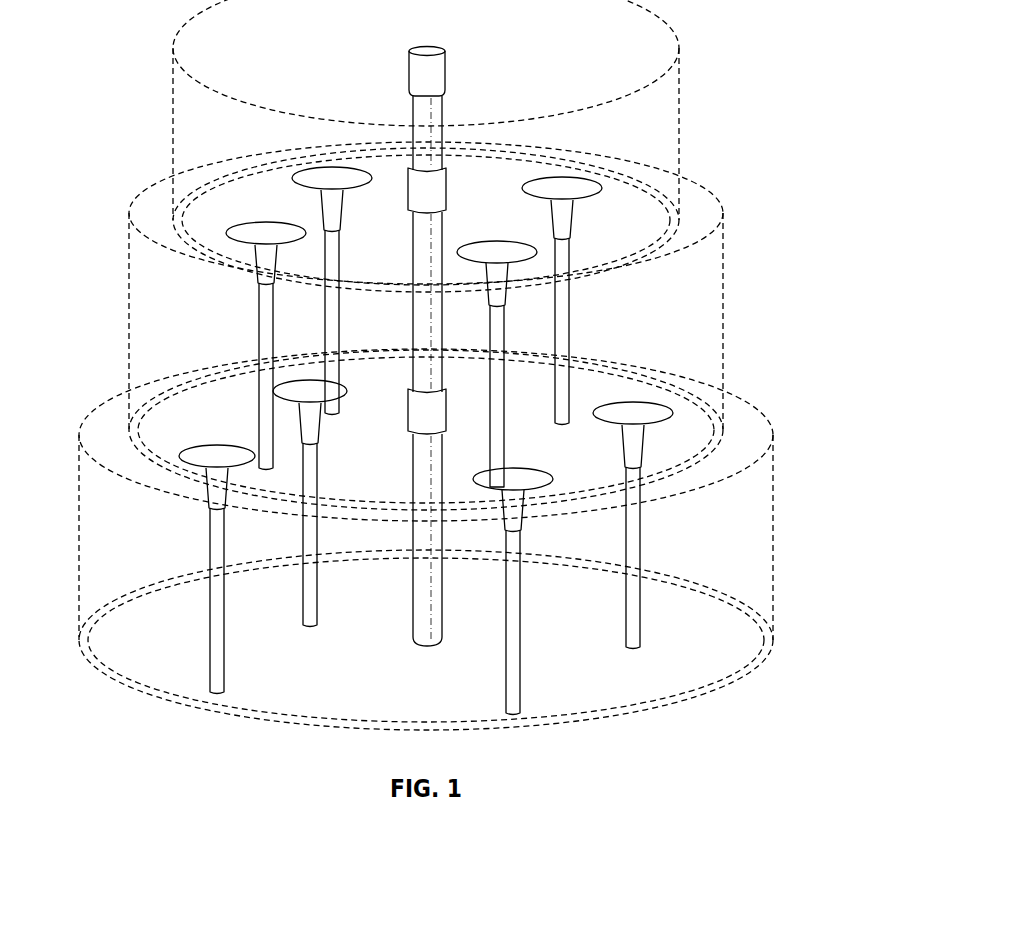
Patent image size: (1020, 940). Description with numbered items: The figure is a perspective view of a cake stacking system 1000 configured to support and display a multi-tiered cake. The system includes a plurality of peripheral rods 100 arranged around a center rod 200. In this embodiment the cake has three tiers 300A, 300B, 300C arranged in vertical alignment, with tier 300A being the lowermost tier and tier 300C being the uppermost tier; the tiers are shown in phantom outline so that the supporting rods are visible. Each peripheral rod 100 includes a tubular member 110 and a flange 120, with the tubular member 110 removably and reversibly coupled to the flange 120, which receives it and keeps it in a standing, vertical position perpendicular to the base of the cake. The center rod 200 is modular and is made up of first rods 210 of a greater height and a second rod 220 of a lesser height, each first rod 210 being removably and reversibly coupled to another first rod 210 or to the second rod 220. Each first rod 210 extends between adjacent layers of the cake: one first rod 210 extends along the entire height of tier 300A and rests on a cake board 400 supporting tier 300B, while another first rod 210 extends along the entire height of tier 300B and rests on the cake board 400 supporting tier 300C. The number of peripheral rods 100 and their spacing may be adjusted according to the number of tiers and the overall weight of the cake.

The cake stacking system 1000 is at (128, 145).
The peripheral rod 100 is at (210, 690).
The tubular member 110 is at (632, 585).
The flange 120 is at (620, 439).
The center rod 200 is at (433, 347).
The first rod 210 is at (418, 302).
The second rod 220 is at (427, 128).
The tier 300A is at (740, 553).
The tier 300B is at (692, 328).
The tier 300C is at (645, 128).
The cake board 400 is at (630, 220).